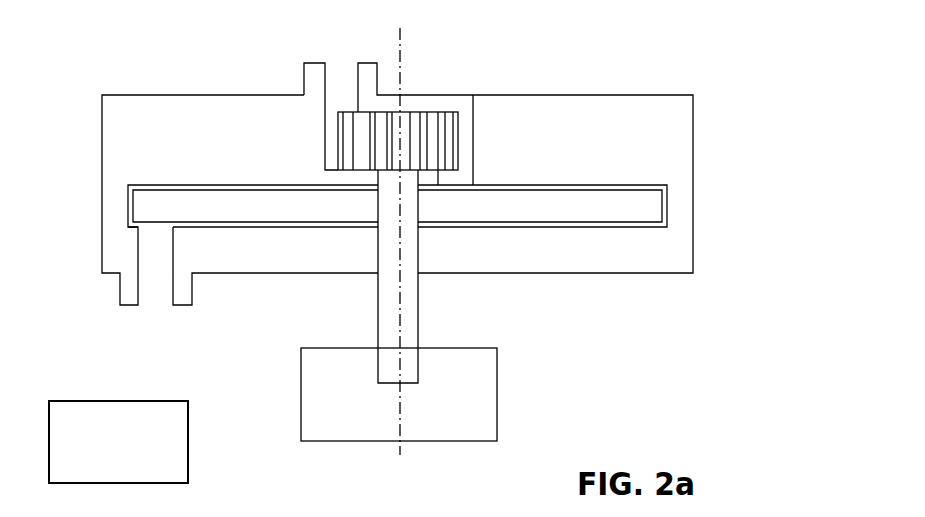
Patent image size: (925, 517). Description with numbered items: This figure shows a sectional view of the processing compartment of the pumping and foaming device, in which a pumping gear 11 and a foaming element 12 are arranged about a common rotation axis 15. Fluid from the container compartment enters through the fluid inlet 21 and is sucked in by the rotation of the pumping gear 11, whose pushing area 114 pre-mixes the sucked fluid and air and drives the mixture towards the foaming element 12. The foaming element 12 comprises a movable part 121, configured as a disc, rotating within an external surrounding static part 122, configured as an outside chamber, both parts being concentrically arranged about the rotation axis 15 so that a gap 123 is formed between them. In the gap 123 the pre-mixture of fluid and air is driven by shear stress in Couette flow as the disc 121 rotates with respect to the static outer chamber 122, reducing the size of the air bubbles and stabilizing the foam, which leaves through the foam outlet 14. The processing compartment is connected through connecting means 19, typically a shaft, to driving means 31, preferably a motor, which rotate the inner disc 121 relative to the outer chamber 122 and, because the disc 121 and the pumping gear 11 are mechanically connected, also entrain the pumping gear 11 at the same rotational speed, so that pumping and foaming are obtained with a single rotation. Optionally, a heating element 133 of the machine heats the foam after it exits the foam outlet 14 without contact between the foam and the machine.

The pumping gear 11 is at (533, 107).
The pushing area 114 is at (465, 148).
The foaming element 12 is at (449, 184).
The movable part 121 is at (643, 206).
The static part 122 is at (683, 135).
The gap 123 is at (161, 186).
The foam outlet 14 is at (157, 305).
The rotation axis 15 is at (402, 32).
The connecting means 19 is at (411, 313).
The fluid inlet 21 is at (341, 66).
The driving means 31 is at (399, 395).
The heating element 133 is at (118, 442).